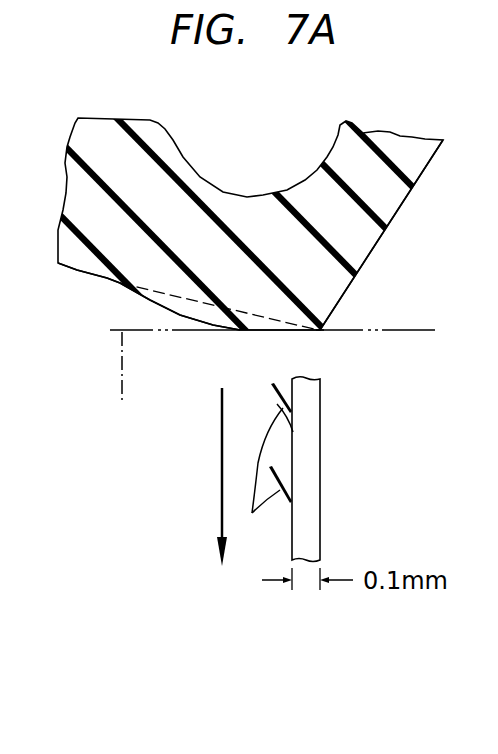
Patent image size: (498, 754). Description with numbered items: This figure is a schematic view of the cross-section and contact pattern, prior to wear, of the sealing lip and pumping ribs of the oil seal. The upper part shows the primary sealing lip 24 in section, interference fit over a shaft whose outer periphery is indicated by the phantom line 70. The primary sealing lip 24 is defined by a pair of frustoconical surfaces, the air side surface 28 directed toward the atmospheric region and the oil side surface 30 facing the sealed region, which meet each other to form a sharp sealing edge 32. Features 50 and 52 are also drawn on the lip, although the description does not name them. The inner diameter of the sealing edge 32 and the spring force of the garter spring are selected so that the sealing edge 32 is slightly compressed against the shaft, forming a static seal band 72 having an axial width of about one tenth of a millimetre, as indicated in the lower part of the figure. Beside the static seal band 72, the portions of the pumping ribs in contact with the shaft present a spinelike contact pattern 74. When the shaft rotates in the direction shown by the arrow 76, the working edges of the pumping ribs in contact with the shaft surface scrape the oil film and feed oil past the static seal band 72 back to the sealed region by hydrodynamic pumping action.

The primary sealing lip 24 is at (262, 228).
The air side frustoconical surface 28 is at (80, 270).
The oil side frustoconical surface 30 is at (375, 247).
The sealing edge 32 is at (321, 333).
The chamfer reference line 50 is at (320, 332).
The curved cutting face 52 is at (187, 318).
The phantom line 70 is at (119, 385).
The static seal band 72 is at (310, 465).
The spinelike contact pattern 74 is at (265, 467).
The arrow 76 is at (223, 467).